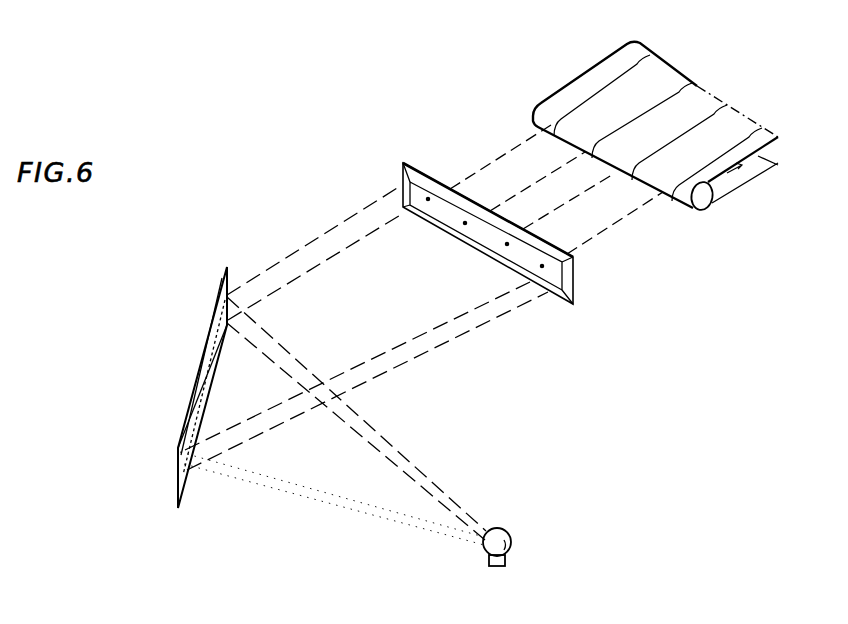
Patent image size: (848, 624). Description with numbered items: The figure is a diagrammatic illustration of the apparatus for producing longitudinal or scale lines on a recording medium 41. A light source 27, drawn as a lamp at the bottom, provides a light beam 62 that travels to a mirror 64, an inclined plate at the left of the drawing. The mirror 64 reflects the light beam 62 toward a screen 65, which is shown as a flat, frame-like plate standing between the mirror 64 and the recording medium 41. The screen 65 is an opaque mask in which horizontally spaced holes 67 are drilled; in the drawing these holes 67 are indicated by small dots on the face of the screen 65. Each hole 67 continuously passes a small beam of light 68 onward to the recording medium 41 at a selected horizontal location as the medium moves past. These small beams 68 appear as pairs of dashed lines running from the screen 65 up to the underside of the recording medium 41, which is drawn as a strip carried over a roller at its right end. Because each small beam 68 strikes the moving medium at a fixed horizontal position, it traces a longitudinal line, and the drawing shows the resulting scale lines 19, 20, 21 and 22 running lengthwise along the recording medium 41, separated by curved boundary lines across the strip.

The recording medium 41 is at (609, 57).
The scale line 19 is at (616, 82).
The scale line 20 is at (646, 108).
The scale line 21 is at (686, 133).
The scale line 22 is at (746, 132).
The light source 27 is at (512, 538).
The light beam 62 is at (344, 224).
The mirror 64 is at (211, 332).
The screen 65 is at (573, 293).
The holes 67 is at (465, 223).
The small beam of light 68 is at (508, 150).